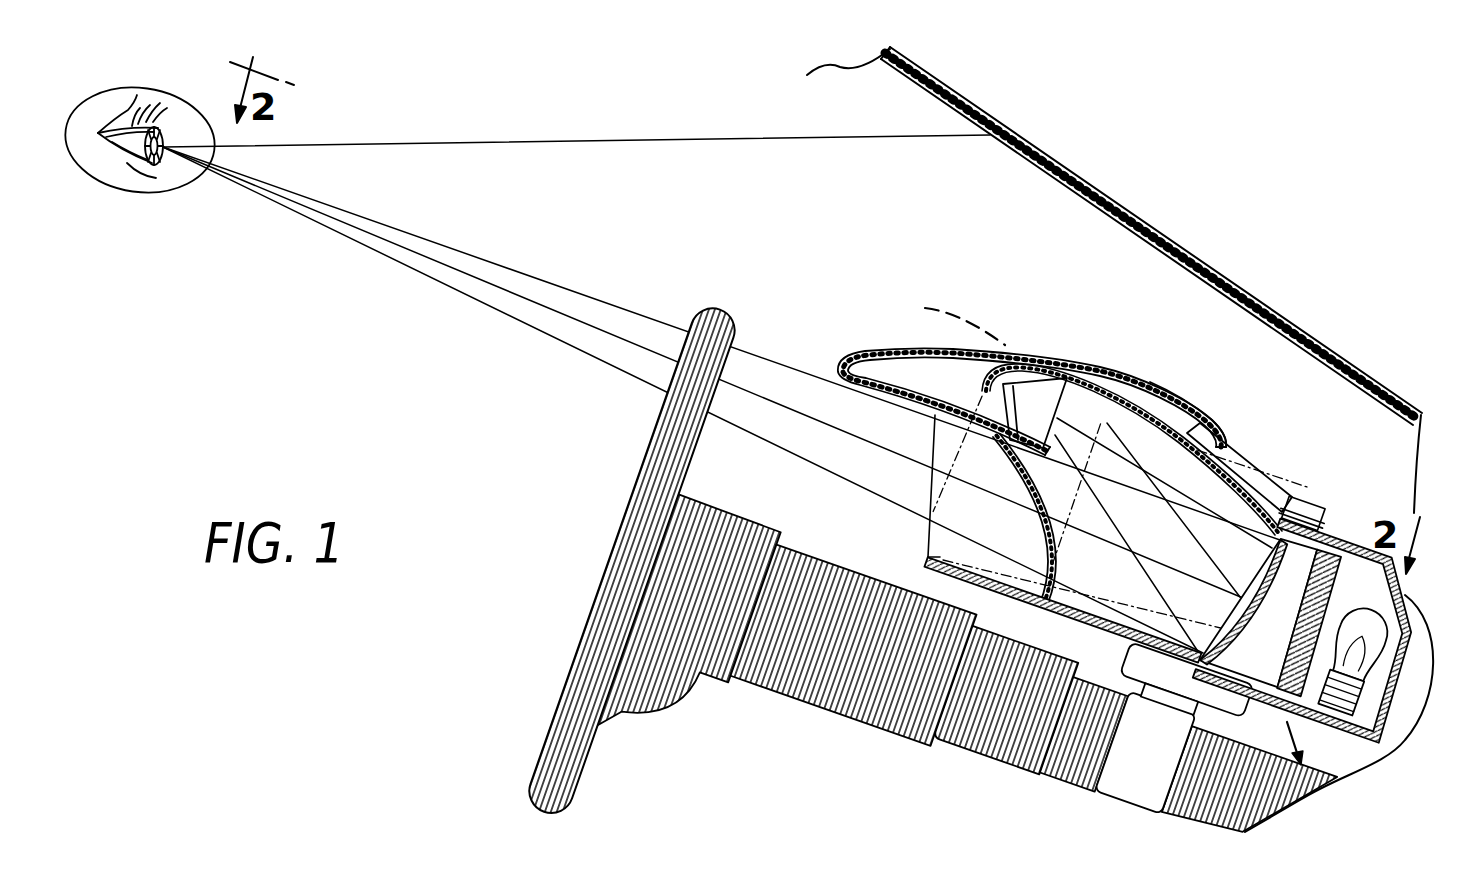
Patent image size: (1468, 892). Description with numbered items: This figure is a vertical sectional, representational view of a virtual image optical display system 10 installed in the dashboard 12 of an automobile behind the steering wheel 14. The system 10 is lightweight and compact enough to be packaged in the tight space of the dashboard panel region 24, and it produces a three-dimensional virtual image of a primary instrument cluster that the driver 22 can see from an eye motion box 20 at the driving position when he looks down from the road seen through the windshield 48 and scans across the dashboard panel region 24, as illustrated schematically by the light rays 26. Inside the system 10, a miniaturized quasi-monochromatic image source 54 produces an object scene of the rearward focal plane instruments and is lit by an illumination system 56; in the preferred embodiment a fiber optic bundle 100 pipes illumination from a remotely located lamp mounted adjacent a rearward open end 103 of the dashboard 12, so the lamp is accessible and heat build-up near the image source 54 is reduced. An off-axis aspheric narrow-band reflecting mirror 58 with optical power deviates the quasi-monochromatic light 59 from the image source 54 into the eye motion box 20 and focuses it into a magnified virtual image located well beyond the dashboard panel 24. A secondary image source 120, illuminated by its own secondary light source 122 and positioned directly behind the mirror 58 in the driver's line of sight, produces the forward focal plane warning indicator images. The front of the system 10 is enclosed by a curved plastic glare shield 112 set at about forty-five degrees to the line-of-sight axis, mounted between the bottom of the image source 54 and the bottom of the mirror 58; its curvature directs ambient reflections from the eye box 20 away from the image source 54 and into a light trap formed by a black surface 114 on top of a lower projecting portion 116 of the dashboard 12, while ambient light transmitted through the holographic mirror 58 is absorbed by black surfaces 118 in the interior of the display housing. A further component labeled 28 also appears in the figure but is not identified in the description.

The optical display system 10 is at (1297, 765).
The dashboard 12 is at (1045, 347).
The steering wheel 14 is at (560, 684).
The eye motion box 20 is at (197, 182).
The driver 22 is at (128, 112).
The dashboard panel region 24 is at (902, 468).
The light rays 26 is at (485, 310).
The mounting block 28 is at (1290, 510).
The windshield 48 is at (1185, 240).
The image source 54 is at (1000, 374).
The illumination system 56 is at (1240, 483).
The reflecting mirror 58 is at (1242, 606).
The quasi-monochromatic light 59 is at (1145, 560).
The fiber optic bundle 100 is at (1085, 375).
The rearward open end 103 is at (1227, 440).
The glare shield 112 is at (1027, 517).
The black surface 114 is at (932, 520).
The lower projecting portion 116 is at (993, 598).
The black surfaces 118 is at (1367, 533).
The secondary image source 120 is at (1343, 537).
The secondary light source 122 is at (1393, 752).